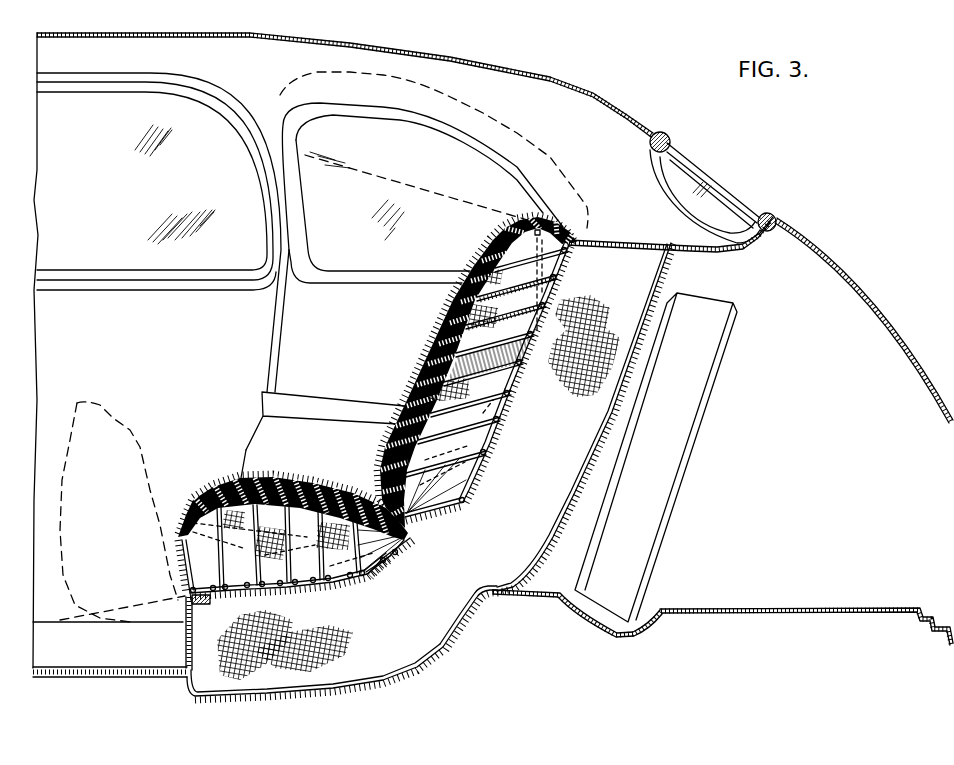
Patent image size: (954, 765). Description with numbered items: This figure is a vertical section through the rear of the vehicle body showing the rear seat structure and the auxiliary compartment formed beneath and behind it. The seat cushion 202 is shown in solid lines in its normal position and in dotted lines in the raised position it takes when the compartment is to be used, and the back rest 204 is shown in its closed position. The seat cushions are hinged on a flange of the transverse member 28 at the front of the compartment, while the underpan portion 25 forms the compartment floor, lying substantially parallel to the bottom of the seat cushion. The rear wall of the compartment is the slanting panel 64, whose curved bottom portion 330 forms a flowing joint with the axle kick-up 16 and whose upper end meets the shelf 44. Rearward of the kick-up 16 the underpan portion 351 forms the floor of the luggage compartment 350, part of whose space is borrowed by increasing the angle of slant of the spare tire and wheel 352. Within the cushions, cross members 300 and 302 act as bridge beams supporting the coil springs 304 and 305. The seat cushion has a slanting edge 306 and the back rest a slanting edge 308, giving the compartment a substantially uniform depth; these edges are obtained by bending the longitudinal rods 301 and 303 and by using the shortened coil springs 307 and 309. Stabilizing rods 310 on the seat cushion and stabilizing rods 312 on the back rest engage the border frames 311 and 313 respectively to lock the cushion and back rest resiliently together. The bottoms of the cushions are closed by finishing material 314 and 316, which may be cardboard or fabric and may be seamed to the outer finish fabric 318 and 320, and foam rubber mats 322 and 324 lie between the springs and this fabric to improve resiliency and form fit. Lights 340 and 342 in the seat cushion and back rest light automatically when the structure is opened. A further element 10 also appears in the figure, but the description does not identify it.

The door sill trim 10 is at (93, 680).
The axle kick-up 16 is at (477, 600).
The underpan portion 25 is at (283, 693).
The transverse member 28 is at (187, 643).
The shelf 44 is at (640, 243).
The slanting panel 64 is at (668, 278).
The seat cushion 202 is at (115, 420).
The back rest 204 is at (390, 165).
The cross member 300 is at (307, 583).
The longitudinal rod 301 is at (532, 332).
The cross member 302 is at (497, 430).
The longitudinal rod 303 is at (240, 593).
The coil spring 304 is at (240, 477).
The coil spring 305 is at (460, 366).
The slanting edge 306 is at (400, 553).
The shortened coil spring 307 is at (327, 528).
The slanting edge 308 is at (457, 518).
The shortened coil spring 309 is at (427, 472).
The stabilizing rod 310 is at (380, 577).
The border frame 311 is at (192, 522).
The stabilizing rod 312 is at (488, 424).
The border frame 313 is at (572, 258).
The finishing material 314 is at (553, 279).
The finishing material 316 is at (232, 600).
The fabric material 318 is at (420, 348).
The fabric material 320 is at (213, 480).
The foam rubber mat 322 is at (203, 480).
The foam rubber mat 324 is at (483, 247).
The bottom portion 330 is at (540, 580).
The light 340 is at (477, 483).
The light 342 is at (340, 590).
The luggage compartment 350 is at (800, 283).
The underpan portion 351 is at (763, 608).
The spare tire and wheel 352 is at (713, 403).